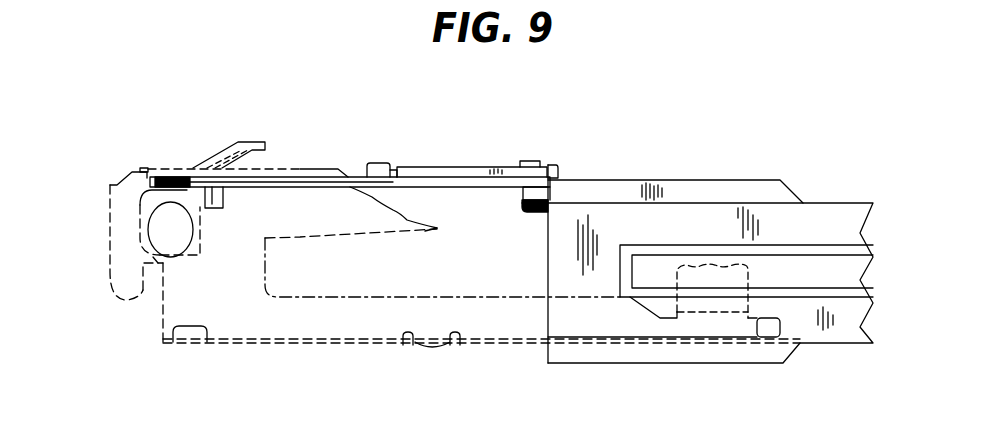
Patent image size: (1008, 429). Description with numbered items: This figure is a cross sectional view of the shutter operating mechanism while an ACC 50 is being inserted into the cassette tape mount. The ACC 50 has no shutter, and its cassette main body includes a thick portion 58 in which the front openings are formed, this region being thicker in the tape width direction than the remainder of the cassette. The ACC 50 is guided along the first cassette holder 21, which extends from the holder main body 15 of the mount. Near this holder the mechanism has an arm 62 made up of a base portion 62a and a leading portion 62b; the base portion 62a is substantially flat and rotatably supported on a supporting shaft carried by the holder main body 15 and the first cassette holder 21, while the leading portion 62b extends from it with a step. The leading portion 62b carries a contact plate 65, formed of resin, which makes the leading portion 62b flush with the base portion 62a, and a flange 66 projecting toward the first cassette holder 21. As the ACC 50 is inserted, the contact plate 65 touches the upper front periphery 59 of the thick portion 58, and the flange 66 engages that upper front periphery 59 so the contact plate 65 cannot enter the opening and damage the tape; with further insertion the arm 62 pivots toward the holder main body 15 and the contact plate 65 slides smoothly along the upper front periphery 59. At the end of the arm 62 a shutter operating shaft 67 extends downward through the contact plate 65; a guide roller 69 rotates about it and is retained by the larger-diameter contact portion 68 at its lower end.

The holder main body 15 is at (125, 225).
The first cassette holder 21 is at (328, 343).
The ACC 50 is at (827, 203).
The thick portion 58 is at (713, 193).
The upper front periphery 59 is at (553, 190).
The arm 62 is at (398, 165).
The base portion 62a is at (300, 168).
The leading portion 62b is at (427, 166).
The contact plate 65 is at (463, 186).
The flange 66 is at (553, 166).
The shutter operating shaft 67 is at (530, 161).
The contact portion 68 is at (530, 213).
The guide roller 69 is at (527, 192).